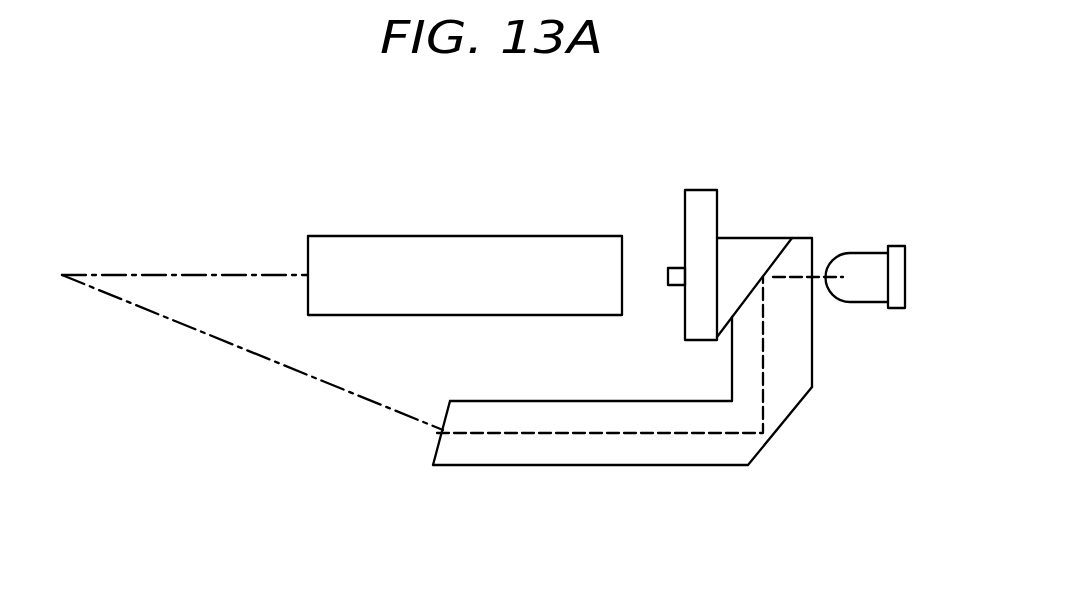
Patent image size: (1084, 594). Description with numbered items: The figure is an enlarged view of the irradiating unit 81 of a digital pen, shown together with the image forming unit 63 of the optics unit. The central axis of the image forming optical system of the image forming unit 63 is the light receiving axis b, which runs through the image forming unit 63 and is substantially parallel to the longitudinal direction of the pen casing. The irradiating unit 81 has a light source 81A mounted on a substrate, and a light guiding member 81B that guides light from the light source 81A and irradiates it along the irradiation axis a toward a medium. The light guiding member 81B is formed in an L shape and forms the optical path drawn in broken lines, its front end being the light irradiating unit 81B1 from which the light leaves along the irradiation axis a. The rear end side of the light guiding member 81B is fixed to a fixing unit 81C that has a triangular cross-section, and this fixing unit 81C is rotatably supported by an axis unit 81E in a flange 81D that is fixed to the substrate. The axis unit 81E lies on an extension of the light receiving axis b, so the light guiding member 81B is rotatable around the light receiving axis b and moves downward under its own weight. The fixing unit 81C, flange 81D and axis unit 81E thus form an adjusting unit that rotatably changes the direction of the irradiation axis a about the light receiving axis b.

The image forming unit 63 is at (508, 243).
The irradiating unit 81 is at (788, 237).
The light source 81A is at (890, 248).
The light guiding member 81B is at (640, 445).
The light irradiating unit 81B1 is at (440, 435).
The fixing unit 81C is at (740, 242).
The flange 81D is at (698, 205).
The axis unit 81E is at (676, 268).
The irradiation axis a is at (231, 343).
The light receiving axis b is at (193, 275).